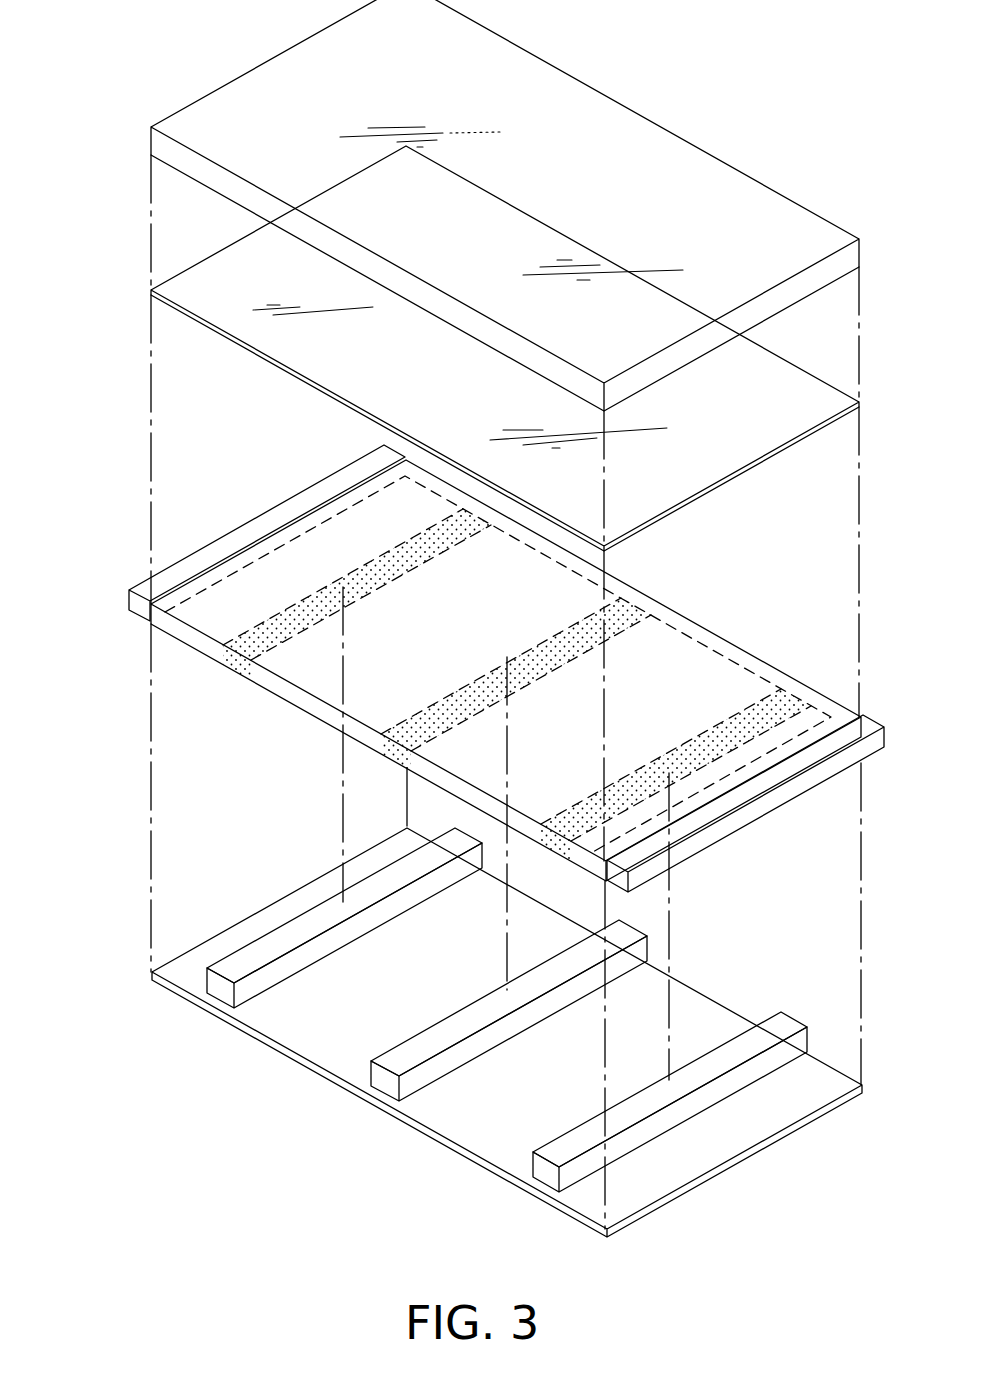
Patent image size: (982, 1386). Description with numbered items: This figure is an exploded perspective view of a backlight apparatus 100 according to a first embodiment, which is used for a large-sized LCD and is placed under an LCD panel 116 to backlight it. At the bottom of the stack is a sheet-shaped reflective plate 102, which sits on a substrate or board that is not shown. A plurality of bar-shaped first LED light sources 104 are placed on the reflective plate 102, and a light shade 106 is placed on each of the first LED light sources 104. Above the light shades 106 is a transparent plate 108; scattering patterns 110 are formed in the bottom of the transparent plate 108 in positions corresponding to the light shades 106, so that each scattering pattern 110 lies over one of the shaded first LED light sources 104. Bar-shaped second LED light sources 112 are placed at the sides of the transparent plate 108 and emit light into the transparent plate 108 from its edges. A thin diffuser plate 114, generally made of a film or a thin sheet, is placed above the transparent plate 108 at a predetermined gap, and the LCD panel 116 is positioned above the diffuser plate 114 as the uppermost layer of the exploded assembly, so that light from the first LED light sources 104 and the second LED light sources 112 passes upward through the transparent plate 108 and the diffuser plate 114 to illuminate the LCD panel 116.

The backlight apparatus 100 is at (778, 42).
The reflective plate 102 is at (452, 1130).
The first LED light sources 104 is at (643, 1137).
The light shades 106 is at (708, 1070).
The transparent plate 108 is at (180, 635).
The scattering patterns 110 is at (273, 645).
The second LED light sources 112 is at (187, 563).
The diffuser plate 114 is at (186, 275).
The LCD panel 116 is at (152, 143).